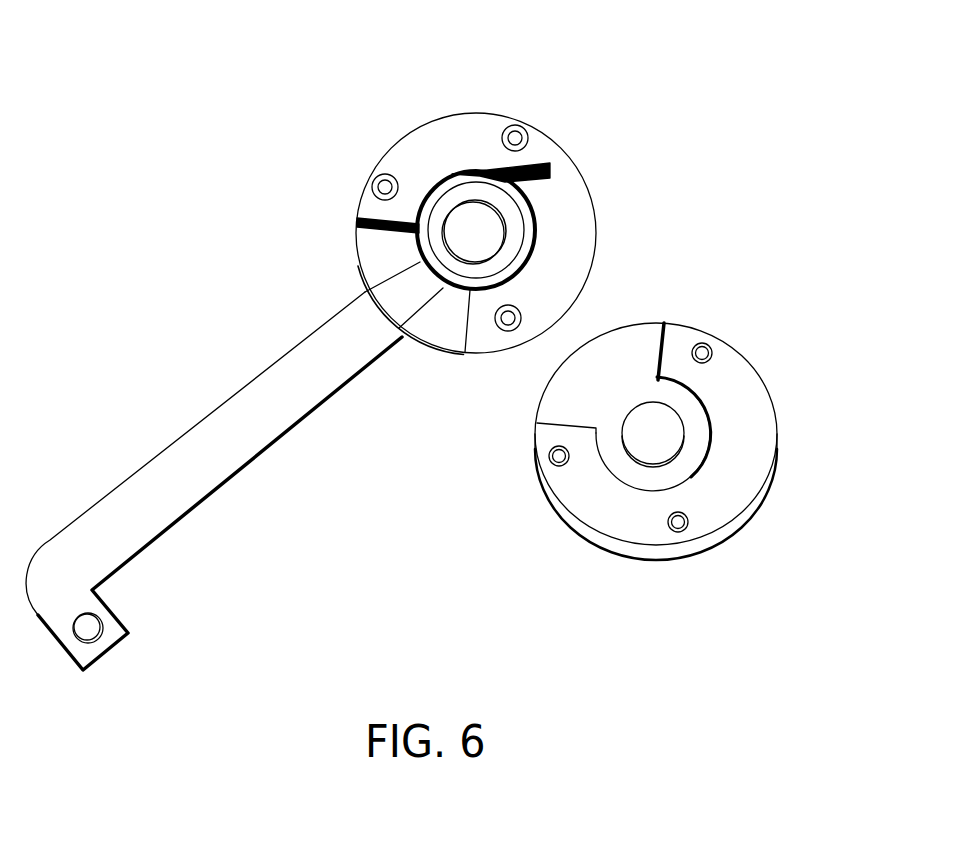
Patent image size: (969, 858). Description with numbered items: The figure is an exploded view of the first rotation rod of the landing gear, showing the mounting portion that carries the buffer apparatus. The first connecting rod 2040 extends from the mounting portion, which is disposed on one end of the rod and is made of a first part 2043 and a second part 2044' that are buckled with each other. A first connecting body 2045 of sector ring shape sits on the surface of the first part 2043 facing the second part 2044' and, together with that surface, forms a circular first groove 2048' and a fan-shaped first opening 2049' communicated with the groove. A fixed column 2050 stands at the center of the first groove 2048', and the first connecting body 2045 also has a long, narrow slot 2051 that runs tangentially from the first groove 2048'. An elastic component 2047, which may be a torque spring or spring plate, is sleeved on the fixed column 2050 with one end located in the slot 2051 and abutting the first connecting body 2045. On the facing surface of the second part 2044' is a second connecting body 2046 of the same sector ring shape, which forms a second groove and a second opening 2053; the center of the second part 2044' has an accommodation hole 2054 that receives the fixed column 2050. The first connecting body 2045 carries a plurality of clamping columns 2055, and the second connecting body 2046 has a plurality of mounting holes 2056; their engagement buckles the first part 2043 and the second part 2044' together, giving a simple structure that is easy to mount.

The first connecting rod 2040 is at (258, 415).
The first part 2043 is at (577, 168).
The second part 2044' is at (679, 290).
The first connecting body 2045 is at (407, 160).
The second connecting body 2046 is at (715, 393).
The elastic component 2047 is at (418, 238).
The first groove 2048' is at (455, 183).
The first opening 2049' is at (342, 295).
The fixed column 2050 is at (457, 218).
The slot 2051 is at (547, 168).
The second opening 2053 is at (577, 395).
The accommodation hole 2054 is at (675, 472).
The clamping columns 2055 is at (370, 185).
The mounting holes 2056 is at (599, 537).